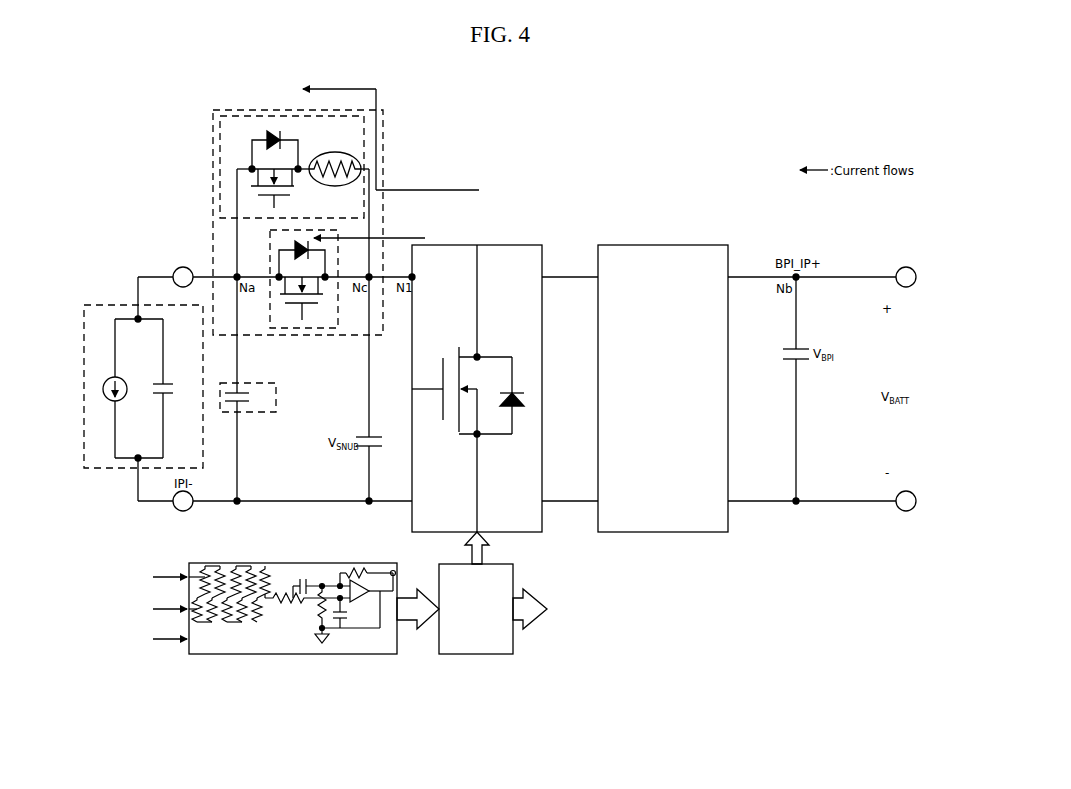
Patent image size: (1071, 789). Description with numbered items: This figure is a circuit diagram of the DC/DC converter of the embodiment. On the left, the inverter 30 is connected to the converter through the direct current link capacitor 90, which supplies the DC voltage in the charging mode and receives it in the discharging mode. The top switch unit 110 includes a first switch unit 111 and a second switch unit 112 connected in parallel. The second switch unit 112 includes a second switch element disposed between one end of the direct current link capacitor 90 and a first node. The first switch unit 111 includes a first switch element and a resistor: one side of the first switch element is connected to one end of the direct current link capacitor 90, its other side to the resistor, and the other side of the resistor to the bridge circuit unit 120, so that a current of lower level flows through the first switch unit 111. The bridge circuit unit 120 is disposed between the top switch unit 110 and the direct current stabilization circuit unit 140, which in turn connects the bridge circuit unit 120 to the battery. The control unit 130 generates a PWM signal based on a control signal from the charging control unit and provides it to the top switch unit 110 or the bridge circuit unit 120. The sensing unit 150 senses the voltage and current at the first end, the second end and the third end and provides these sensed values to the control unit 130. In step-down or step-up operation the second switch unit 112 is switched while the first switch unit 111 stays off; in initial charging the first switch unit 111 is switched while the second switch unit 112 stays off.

The inverter 30 is at (120, 470).
The direct current link capacitor 90 is at (263, 425).
The top switch unit 110 is at (213, 149).
The first switch unit 111 is at (220, 180).
The second switch unit 112 is at (268, 246).
The bridge circuit unit 120 is at (523, 245).
The control unit 130 is at (475, 656).
The direct current stabilization circuit unit 140 is at (681, 245).
The sensing unit 150 is at (248, 657).